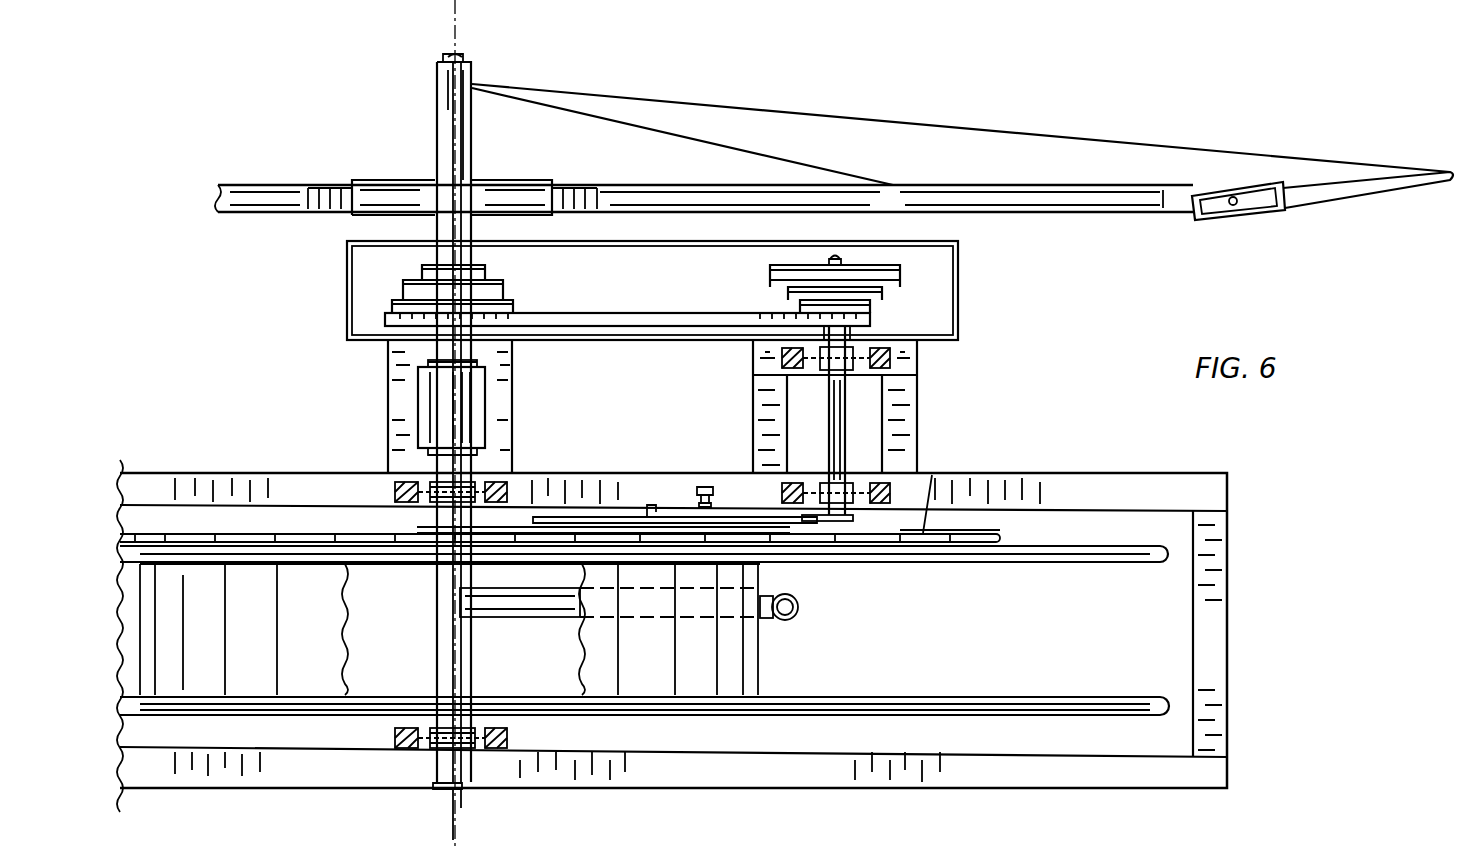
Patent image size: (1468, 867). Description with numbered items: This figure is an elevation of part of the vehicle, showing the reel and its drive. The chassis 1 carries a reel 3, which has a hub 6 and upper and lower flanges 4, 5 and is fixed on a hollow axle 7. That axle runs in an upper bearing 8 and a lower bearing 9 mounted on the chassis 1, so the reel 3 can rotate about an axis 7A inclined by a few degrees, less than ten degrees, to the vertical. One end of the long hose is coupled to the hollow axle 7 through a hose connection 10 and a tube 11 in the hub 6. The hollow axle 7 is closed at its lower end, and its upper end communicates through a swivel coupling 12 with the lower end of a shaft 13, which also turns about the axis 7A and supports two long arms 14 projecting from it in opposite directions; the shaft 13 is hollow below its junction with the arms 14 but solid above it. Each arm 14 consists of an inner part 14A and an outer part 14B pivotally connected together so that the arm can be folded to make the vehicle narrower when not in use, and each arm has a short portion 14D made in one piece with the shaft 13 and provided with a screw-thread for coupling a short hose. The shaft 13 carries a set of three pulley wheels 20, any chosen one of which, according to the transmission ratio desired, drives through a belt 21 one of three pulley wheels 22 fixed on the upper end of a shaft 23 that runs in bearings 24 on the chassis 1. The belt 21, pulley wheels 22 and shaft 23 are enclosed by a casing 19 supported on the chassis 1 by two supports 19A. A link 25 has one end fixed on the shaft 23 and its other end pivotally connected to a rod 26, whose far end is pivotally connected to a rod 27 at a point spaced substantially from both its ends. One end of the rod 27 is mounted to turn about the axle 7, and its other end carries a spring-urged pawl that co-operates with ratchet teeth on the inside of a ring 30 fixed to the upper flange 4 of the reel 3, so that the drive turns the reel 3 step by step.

The chassis 1 is at (1077, 473).
The reel 3 is at (1160, 619).
The upper flange 4 is at (1097, 553).
The lower flange 5 is at (1078, 700).
The hub 6 is at (757, 652).
The hollow axle 7 is at (438, 652).
The axis 7A is at (455, 808).
The upper bearing 8 is at (515, 490).
The lower bearing 9 is at (507, 740).
The hose connection 10 is at (800, 603).
The tube 11 is at (548, 612).
The swivel coupling 12 is at (437, 390).
The shaft 13 is at (440, 100).
The arm 14 is at (268, 195).
The inner part 14A is at (1040, 197).
The outer part 14B is at (1347, 195).
The short portion 14D is at (385, 190).
The casing 19 is at (347, 297).
The support 19A is at (390, 422).
The pulley wheel 20 is at (490, 292).
The belt 21 is at (578, 316).
The pulley wheel 22 is at (800, 320).
The shaft 23 is at (845, 410).
The bearing 24 is at (760, 360).
The link 25 is at (865, 520).
The rod 26 is at (630, 520).
The rod 27 is at (525, 520).
The ring 30 is at (922, 535).